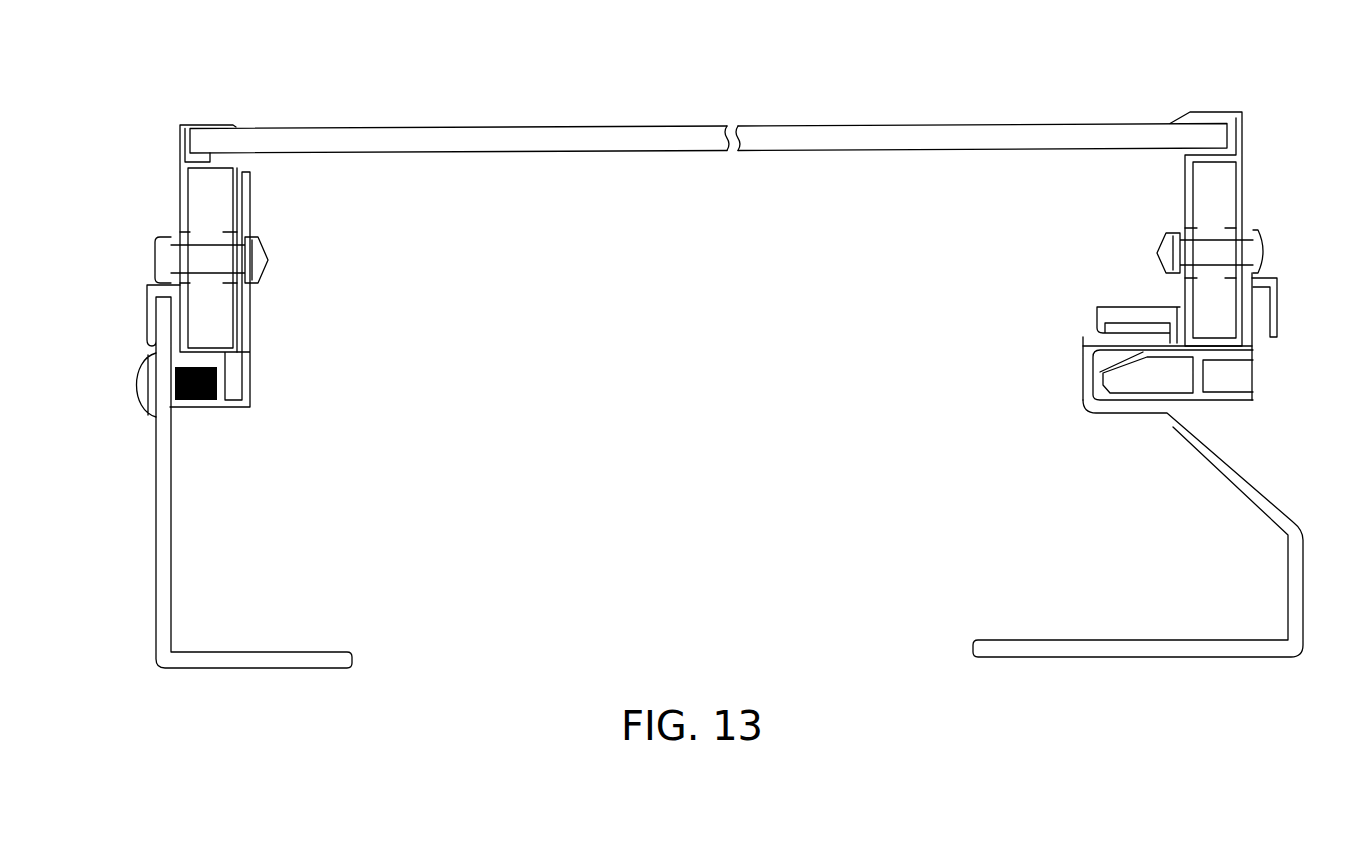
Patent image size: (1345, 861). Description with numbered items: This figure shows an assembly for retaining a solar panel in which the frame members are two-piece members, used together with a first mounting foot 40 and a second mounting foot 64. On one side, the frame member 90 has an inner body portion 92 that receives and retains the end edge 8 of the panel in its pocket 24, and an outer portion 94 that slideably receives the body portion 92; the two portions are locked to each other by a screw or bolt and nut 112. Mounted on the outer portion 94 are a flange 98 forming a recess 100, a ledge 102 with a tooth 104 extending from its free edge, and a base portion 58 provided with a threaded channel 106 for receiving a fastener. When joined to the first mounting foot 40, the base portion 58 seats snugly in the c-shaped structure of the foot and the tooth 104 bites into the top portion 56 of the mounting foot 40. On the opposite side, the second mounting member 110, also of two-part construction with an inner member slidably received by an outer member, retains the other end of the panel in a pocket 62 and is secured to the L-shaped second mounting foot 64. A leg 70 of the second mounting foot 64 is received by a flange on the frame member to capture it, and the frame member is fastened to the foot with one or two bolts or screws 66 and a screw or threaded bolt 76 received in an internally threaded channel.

The end edge 8 is at (1213, 110).
The pocket 24 is at (1220, 128).
The first mounting foot 40 is at (1180, 506).
The top portion 56 is at (1147, 348).
The base portion 58 is at (1210, 407).
The pocket 62 is at (233, 126).
The second mounting foot 64 is at (205, 518).
The bolts or screws 66 is at (140, 387).
The leg 70 is at (157, 522).
The screw or threaded bolt 76 is at (253, 300).
The frame member 90 is at (1113, 250).
The body portion 92 is at (1247, 187).
The portion 94 is at (1255, 224).
The flange 98 is at (1278, 320).
The recess 100 is at (1266, 342).
The ledge 102 is at (1128, 307).
The tooth 104 is at (1097, 312).
The threaded channel 106 is at (1240, 388).
The second mounting member 110 is at (300, 240).
The screw or bolt and nut 112 is at (1156, 245).